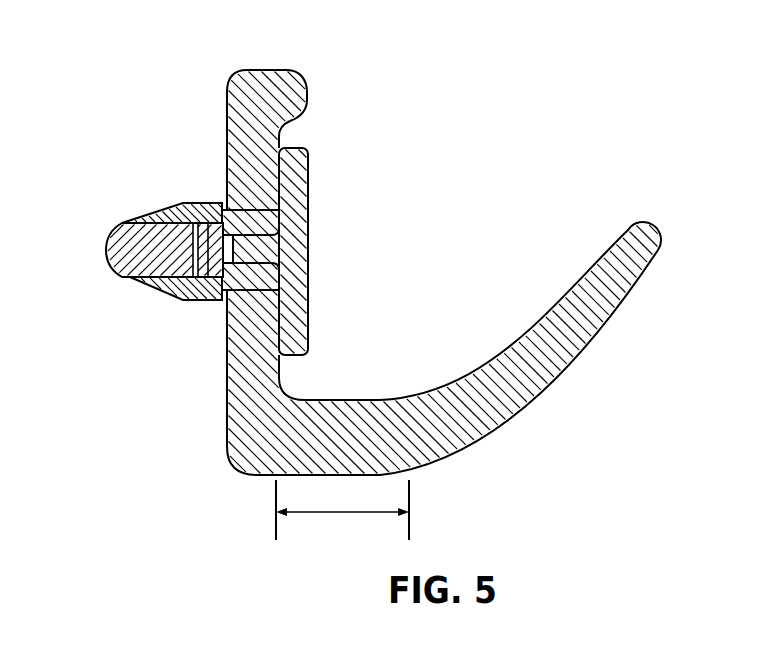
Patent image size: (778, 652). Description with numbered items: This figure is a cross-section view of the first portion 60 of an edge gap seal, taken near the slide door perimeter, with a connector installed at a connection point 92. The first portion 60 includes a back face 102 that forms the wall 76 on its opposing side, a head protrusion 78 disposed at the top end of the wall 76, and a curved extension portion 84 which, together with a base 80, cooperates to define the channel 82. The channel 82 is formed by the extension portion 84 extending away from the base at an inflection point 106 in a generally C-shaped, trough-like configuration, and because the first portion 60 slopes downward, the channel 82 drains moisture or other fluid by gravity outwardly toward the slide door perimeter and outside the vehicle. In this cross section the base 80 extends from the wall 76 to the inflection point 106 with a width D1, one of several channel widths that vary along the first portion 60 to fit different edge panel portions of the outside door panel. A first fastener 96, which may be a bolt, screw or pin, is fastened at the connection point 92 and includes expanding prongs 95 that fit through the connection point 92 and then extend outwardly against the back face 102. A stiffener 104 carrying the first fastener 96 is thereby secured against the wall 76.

The first portion 60 is at (227, 98).
The head protrusion 78 is at (303, 71).
The wall 76 is at (287, 122).
The connection point 92 is at (225, 206).
The stiffener 104 is at (308, 247).
The back face 102 is at (227, 352).
The base 80 is at (328, 400).
The inflection point 106 is at (423, 393).
The curved extension portion 84 is at (598, 263).
The expanding prongs 95 is at (163, 204).
The first fastener 96 is at (117, 250).
The channel 82 is at (458, 220).
The width D1 is at (342, 510).